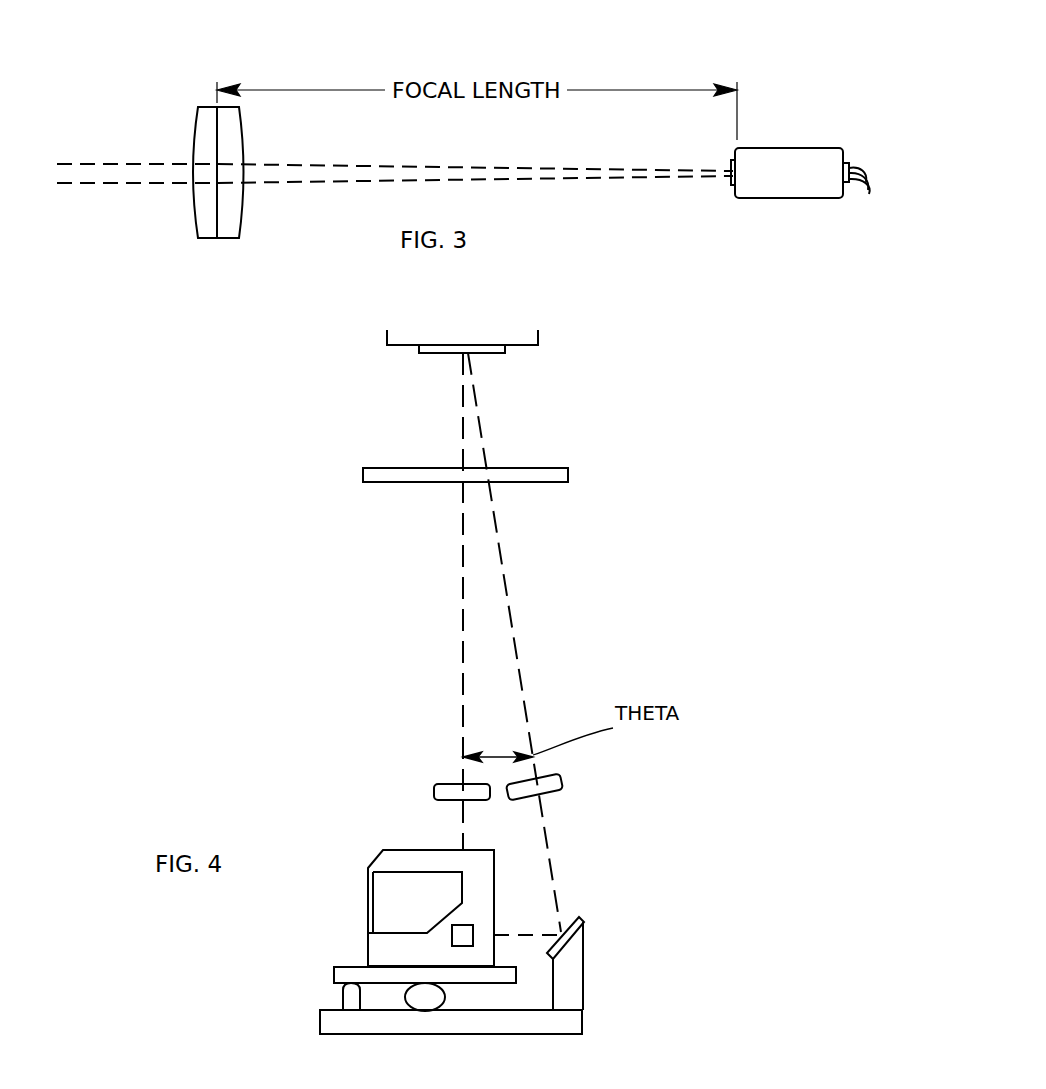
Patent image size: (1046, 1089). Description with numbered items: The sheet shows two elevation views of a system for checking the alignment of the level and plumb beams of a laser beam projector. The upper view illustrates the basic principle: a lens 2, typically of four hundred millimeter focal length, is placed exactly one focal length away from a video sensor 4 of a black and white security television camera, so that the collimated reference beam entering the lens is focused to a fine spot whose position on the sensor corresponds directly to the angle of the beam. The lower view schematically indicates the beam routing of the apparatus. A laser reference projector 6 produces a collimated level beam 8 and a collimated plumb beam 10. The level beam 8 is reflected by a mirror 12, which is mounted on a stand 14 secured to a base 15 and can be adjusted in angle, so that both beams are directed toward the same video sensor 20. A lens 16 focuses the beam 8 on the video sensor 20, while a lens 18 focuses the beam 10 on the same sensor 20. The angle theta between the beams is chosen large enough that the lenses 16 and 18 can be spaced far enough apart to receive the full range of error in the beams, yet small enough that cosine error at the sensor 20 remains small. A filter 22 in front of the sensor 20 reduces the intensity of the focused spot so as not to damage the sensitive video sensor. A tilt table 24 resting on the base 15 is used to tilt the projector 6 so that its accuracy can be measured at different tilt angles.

In FIG. 3, the focal length lens 2 is at (242, 133).
In FIG. 3, the video sensor 4 is at (790, 148).
In FIG. 4, the laser reference projector 6 is at (370, 902).
In FIG. 4, the collimated level beam 8 is at (548, 865).
In FIG. 4, the collimated plumb beam 10 is at (453, 827).
In FIG. 4, the mirror 12 is at (583, 917).
In FIG. 4, the stand 14 is at (583, 957).
In FIG. 4, the base 15 is at (583, 1020).
In FIG. 4, the lens 16 is at (537, 777).
In FIG. 4, the lens 18 is at (462, 784).
In FIG. 4, the video sensor 20 is at (505, 353).
In FIG. 4, the filter 22 is at (530, 482).
In FIG. 4, the tilt table 24 is at (334, 967).